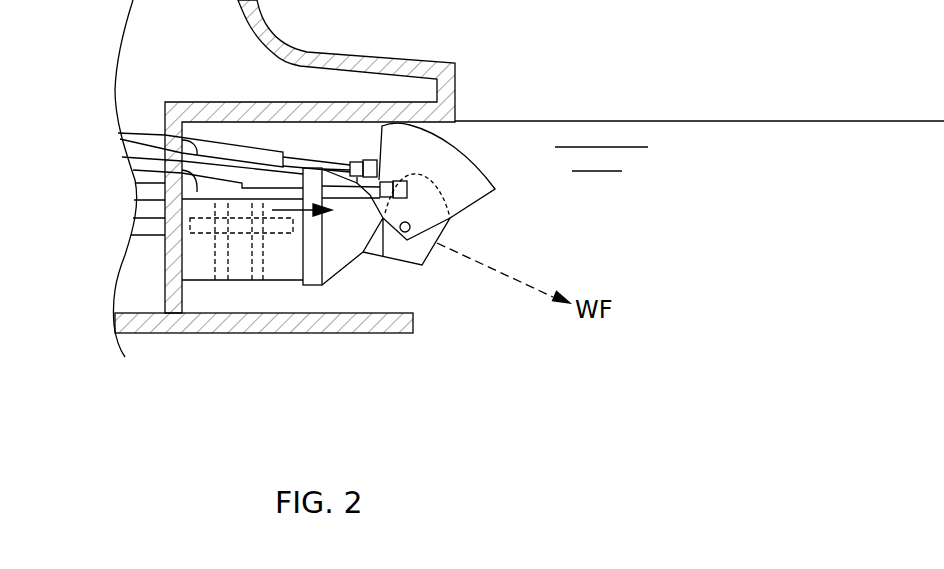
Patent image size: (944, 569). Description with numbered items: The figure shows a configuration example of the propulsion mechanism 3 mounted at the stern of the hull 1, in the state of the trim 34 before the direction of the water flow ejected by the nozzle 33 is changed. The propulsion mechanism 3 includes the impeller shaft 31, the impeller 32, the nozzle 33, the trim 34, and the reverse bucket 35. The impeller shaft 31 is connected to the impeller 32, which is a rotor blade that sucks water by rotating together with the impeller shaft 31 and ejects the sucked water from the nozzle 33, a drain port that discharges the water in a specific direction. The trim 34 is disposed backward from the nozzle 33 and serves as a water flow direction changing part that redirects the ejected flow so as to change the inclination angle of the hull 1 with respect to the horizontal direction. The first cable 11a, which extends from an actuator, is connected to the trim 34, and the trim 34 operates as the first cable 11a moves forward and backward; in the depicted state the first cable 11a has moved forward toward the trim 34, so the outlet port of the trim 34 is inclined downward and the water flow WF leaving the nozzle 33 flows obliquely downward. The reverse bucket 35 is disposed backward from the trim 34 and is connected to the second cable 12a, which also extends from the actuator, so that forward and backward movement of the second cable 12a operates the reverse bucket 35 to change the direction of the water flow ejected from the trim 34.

The hull 1 is at (278, 334).
The propulsion mechanism 3 is at (525, 72).
The first cable 11a is at (133, 170).
The second cable 12a is at (118, 133).
The impeller shaft 31 is at (198, 228).
The impeller 32 is at (222, 282).
The nozzle 33 is at (343, 253).
The trim 34 is at (407, 255).
The reverse bucket 35 is at (459, 157).